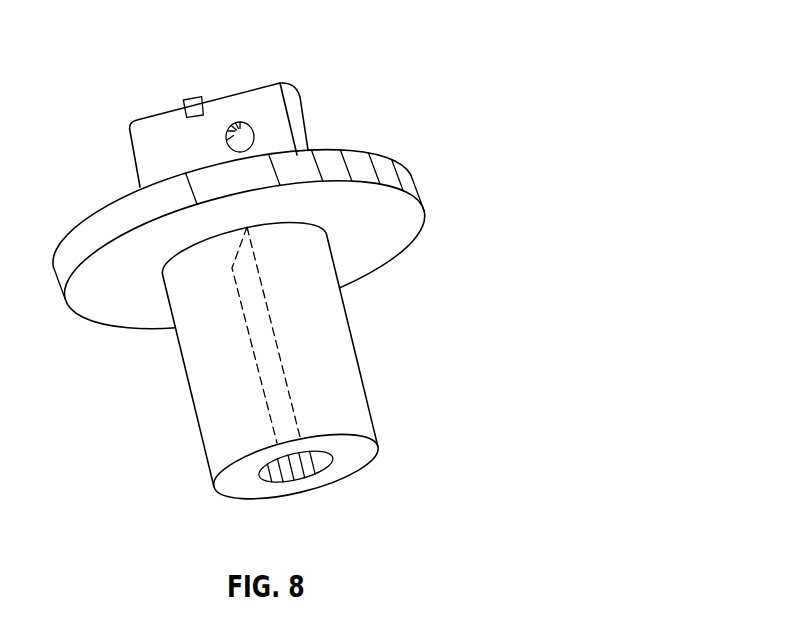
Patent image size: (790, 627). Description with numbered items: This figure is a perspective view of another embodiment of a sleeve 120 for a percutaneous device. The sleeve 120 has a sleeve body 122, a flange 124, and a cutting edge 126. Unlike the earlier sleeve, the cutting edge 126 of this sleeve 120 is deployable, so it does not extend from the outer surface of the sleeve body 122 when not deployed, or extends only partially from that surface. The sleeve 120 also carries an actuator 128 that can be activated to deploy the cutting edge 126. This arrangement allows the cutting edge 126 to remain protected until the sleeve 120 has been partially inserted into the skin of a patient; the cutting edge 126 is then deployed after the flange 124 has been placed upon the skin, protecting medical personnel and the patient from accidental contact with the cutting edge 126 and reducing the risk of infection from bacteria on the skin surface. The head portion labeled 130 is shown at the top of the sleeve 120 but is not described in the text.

The sleeve 120 is at (405, 43).
The sleeve body 122 is at (270, 366).
The flange 124 is at (368, 162).
The cutting edge 126 is at (297, 417).
The actuator 128 is at (200, 101).
The head portion 130 is at (277, 187).